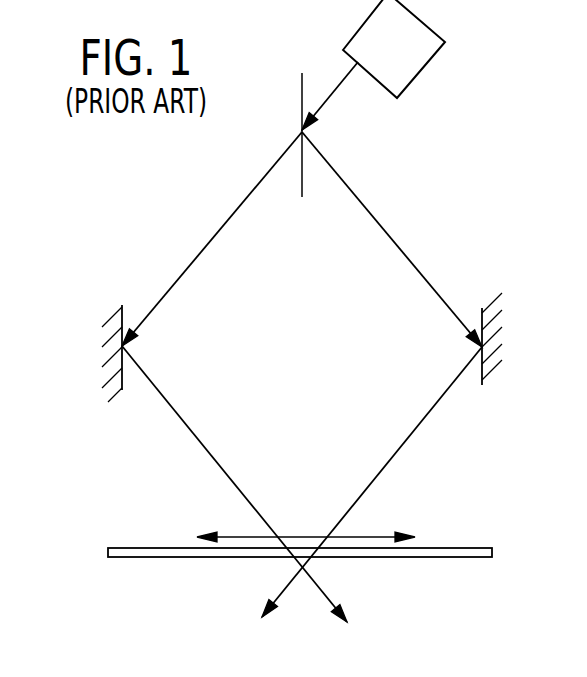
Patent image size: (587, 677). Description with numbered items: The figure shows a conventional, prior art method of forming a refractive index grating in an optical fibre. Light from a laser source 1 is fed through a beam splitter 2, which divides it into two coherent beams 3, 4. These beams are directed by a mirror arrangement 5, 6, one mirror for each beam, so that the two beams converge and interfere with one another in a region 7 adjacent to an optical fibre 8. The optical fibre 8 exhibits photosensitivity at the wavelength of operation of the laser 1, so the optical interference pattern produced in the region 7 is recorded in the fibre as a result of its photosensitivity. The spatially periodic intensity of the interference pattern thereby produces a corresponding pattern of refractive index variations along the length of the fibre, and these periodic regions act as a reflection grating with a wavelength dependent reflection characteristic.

The laser source 1 is at (412, 86).
The beam splitter 2 is at (302, 183).
The coherent beam 3 is at (196, 442).
The coherent beam 4 is at (400, 446).
The mirror 5 is at (122, 305).
The mirror 6 is at (482, 310).
The interference region 7 is at (380, 537).
The optical fibre 8 is at (472, 557).